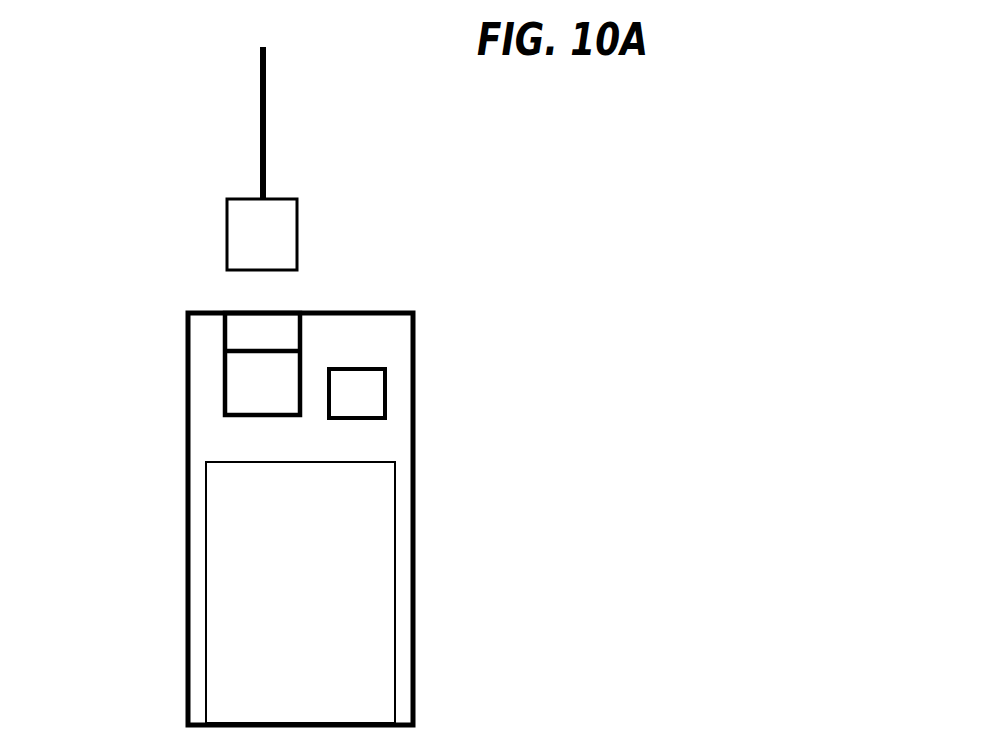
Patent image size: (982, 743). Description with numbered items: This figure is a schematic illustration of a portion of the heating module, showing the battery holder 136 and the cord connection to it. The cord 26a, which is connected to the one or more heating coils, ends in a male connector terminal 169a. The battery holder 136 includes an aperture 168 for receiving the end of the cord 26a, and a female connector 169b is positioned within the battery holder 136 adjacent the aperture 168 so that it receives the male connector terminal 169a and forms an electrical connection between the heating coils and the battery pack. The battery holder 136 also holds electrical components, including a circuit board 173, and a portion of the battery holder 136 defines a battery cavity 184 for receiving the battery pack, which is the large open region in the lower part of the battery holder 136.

The cord 26a is at (260, 106).
The male connector terminal 169a is at (297, 217).
The aperture 168 is at (256, 331).
The female connector 169b is at (223, 386).
The circuit board 173 is at (387, 384).
The battery holder 136 is at (413, 480).
The battery cavity 184 is at (236, 575).